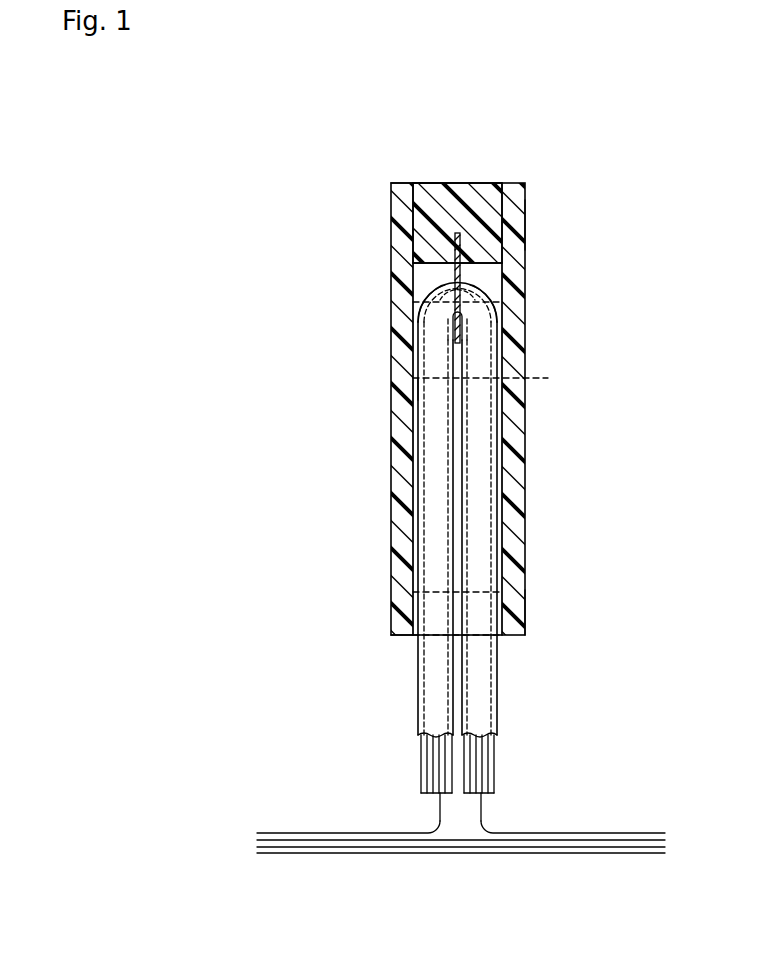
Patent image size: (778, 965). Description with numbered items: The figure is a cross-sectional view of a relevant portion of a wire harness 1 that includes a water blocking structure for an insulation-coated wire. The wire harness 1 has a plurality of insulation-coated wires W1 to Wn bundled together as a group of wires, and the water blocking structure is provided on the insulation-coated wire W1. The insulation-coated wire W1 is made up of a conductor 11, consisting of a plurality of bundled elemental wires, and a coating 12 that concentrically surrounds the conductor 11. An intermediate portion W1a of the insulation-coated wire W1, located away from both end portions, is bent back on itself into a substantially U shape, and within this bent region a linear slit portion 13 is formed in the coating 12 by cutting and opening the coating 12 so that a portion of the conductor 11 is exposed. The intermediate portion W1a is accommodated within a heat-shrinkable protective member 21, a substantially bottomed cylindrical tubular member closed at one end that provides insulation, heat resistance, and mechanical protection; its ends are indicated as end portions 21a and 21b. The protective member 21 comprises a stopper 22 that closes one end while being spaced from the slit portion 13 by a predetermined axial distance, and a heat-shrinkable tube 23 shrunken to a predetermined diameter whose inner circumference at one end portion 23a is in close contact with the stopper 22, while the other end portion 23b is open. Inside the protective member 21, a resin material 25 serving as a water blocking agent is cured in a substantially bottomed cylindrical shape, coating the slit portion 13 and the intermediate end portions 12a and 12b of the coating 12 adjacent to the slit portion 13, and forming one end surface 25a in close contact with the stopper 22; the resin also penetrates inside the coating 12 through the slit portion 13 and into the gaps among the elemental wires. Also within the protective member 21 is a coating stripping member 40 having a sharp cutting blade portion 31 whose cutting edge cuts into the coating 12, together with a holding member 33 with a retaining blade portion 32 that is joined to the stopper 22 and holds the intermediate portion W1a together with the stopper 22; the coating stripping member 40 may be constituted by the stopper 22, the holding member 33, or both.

The wire harness 1 is at (463, 833).
The conductor 11 is at (494, 775).
The coating 12 is at (462, 509).
The intermediate end portion 12a is at (493, 291).
The intermediate end portion 12b is at (422, 300).
The slit portion 13 is at (448, 278).
The protective member 21 is at (389, 397).
The housing open end 21a is at (411, 637).
The housing closed end 21b is at (428, 182).
The stopper 22 is at (493, 190).
The heat-shrinkable tube 23 is at (389, 410).
The end portion 23a is at (517, 225).
The other end portion 23b is at (520, 616).
The resin material 25 is at (500, 426).
The end surface 25a is at (495, 262).
The cutting blade portion 31 is at (458, 232).
The retaining blade portion 32 is at (466, 332).
The holding member 33 is at (494, 380).
The coating stripping member 40 is at (467, 181).
The insulation-coated wire W1 is at (461, 535).
The intermediate portion W1a is at (428, 388).
The insulation-coated wire Wn is at (298, 858).